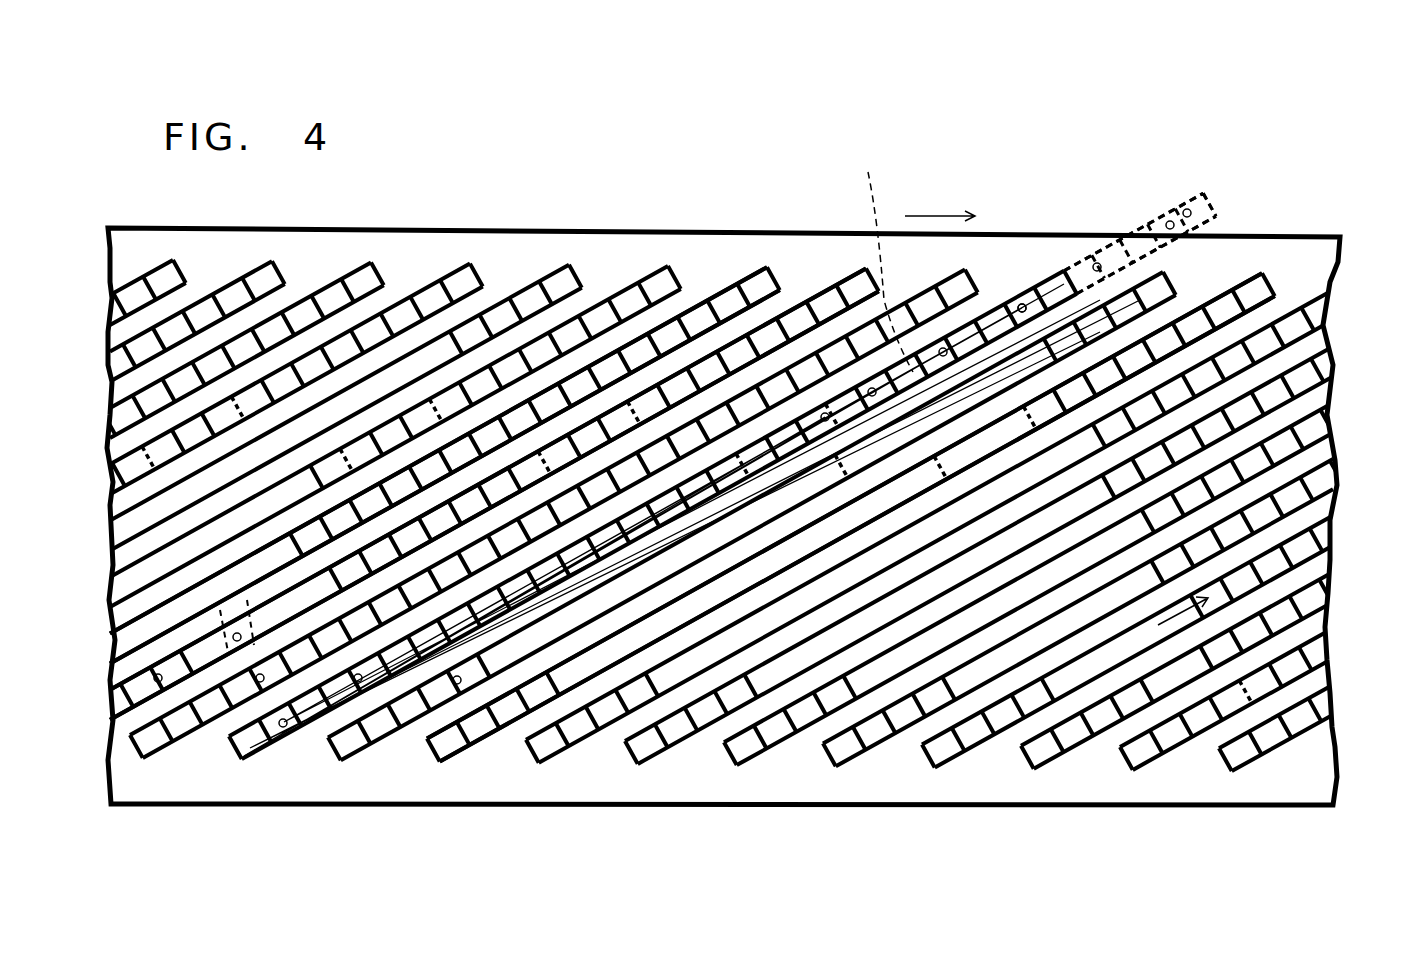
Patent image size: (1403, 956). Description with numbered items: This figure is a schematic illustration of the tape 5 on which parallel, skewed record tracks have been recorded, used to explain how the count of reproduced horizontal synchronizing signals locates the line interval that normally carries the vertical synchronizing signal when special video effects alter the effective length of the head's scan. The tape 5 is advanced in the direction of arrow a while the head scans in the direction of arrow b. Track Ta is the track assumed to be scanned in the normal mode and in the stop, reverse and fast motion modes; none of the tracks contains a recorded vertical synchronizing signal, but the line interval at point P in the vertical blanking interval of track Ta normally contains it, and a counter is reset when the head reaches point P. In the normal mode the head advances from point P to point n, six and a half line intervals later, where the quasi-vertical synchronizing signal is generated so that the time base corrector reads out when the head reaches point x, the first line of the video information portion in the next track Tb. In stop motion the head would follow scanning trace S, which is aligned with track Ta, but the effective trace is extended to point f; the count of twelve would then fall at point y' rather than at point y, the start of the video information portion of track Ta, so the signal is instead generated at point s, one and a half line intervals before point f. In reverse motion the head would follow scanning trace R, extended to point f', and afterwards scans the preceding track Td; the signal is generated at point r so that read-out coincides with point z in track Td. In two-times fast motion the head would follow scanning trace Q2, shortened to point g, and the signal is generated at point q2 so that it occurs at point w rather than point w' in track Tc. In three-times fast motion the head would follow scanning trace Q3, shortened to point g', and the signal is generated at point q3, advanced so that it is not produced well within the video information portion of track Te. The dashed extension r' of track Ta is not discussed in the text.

The tape 5 is at (530, 231).
The track Te is at (773, 268).
The point q3 is at (820, 305).
The track Tc is at (870, 307).
The point g' is at (884, 248).
The arrow a is at (940, 192).
The track Tb is at (976, 272).
The point g is at (1034, 221).
The track Ta is at (1072, 272).
The point s is at (1097, 262).
The point f is at (1148, 206).
The point r is at (1177, 177).
The dashed strip extension r prime r' is at (1145, 204).
The point f' is at (1162, 219).
The track Td is at (1236, 268).
The point P is at (757, 310).
The scanning trace Q3 is at (821, 414).
The scanning trace Q2 is at (870, 388).
The point q2 is at (945, 348).
The point n is at (1052, 262).
The scanning trace S is at (1175, 235).
The scanning trace R is at (1207, 292).
The point w is at (129, 781).
The point w' is at (194, 782).
The point x is at (260, 682).
The point y' is at (279, 790).
The point y is at (349, 767).
The point z is at (457, 684).
The arrow b is at (1180, 620).